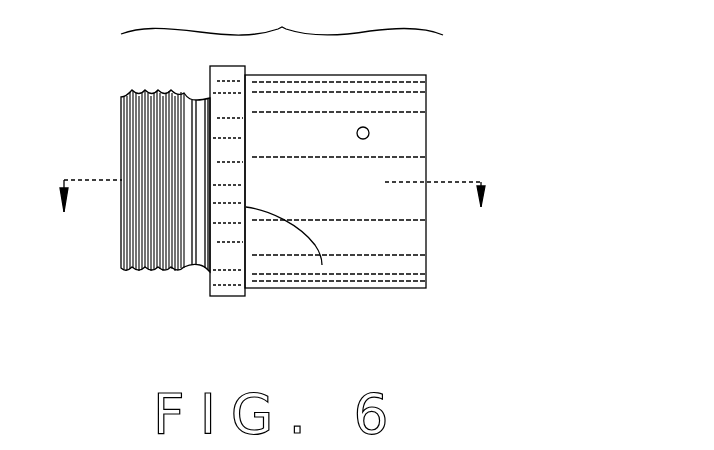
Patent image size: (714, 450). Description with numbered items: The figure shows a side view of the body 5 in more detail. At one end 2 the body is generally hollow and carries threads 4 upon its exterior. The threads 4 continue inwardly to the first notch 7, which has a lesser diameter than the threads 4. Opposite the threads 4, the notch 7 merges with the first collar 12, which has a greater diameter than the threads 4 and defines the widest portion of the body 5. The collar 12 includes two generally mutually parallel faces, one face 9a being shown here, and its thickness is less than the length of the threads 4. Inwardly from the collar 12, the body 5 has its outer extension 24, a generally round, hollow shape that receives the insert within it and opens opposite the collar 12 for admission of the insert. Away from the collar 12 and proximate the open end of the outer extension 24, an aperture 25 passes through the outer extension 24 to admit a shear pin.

The end 2 is at (144, 211).
The threads 4 is at (146, 275).
The body 5 is at (282, 18).
The first notch 7 is at (200, 270).
The face 9a is at (322, 255).
The first collar 12 is at (245, 297).
The outer extension 24 is at (388, 257).
The aperture 25 is at (369, 130).